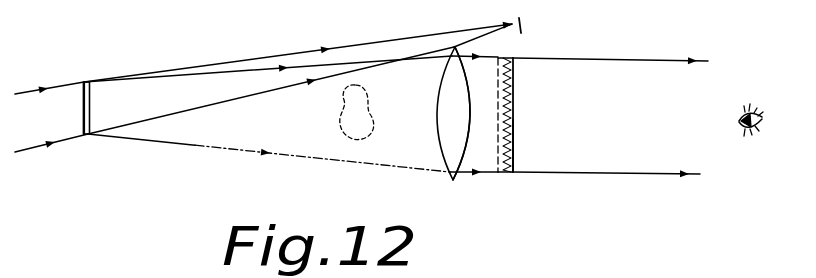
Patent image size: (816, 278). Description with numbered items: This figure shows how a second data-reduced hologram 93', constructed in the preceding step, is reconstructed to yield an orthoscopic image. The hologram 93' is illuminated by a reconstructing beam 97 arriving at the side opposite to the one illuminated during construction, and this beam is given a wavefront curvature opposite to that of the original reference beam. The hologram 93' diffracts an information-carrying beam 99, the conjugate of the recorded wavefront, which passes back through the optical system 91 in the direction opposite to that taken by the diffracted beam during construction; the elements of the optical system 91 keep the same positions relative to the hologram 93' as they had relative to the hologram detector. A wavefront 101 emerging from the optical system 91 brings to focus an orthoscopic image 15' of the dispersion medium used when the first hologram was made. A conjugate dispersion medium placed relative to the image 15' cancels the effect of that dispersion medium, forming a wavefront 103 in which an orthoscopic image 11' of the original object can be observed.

The hologram 93' is at (120, 85).
The reconstructing beam 97 is at (37, 145).
The information-carrying beam 99 is at (200, 144).
The orthoscopic image of the original object 11' is at (375, 124).
The optical system 91 is at (447, 165).
The wavefront 101 is at (464, 173).
The orthoscopic image of the dispersion medium 15' is at (535, 169).
The wavefront 103 is at (622, 67).